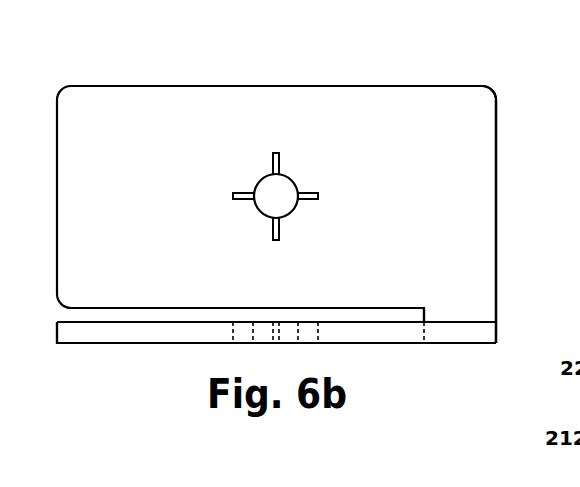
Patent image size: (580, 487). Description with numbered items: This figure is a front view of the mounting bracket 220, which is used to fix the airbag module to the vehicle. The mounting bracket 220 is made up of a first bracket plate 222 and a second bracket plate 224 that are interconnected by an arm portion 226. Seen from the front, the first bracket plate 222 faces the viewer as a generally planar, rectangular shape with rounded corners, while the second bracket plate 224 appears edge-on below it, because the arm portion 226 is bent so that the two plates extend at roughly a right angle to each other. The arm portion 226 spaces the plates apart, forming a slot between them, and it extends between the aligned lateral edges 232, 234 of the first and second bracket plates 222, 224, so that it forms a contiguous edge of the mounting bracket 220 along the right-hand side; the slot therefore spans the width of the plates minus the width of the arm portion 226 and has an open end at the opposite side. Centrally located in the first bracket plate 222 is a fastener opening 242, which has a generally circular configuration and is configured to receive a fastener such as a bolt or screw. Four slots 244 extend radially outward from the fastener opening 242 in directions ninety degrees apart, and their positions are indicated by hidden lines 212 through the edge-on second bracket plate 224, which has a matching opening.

The mounting bracket 220 is at (117, 46).
The first bracket plate 222 is at (474, 130).
The second bracket plate 224 is at (178, 322).
The arm portion 226 is at (457, 316).
The lateral edge of first bracket plate 232 is at (496, 185).
The lateral edge of second bracket plate 234 is at (458, 333).
The electrical contact (hidden) 212 is at (285, 332).
The fastener opening 242 is at (256, 168).
The slots 244 is at (281, 162).